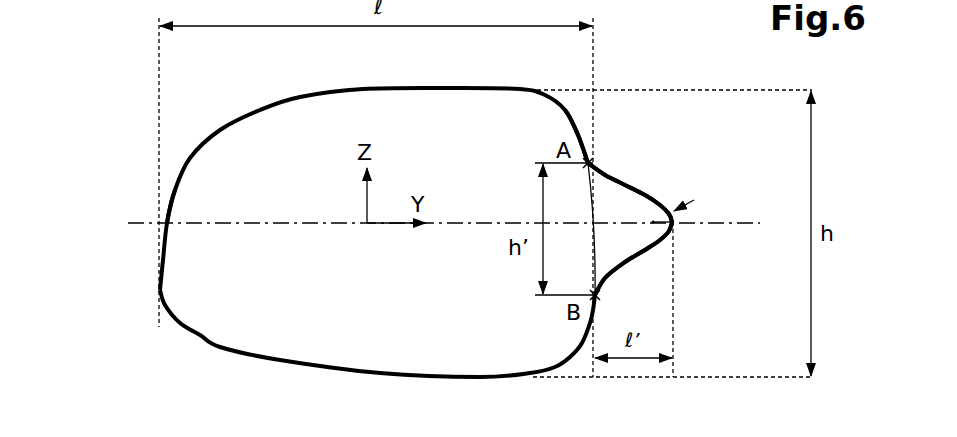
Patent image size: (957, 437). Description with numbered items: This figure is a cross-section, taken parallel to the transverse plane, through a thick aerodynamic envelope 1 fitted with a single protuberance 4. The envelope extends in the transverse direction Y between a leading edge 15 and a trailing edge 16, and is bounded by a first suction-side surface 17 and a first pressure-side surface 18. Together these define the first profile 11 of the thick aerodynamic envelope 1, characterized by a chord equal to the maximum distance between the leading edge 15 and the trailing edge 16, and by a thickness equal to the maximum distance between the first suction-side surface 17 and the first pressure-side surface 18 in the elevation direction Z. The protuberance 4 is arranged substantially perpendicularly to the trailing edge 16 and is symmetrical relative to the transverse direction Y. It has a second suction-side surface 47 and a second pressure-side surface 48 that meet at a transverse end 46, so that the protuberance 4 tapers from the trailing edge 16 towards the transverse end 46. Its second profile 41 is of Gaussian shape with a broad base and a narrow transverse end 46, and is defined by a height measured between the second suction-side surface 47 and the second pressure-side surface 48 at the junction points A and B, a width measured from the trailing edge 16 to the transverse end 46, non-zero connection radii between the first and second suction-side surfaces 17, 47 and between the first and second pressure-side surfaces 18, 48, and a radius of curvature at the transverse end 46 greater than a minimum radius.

The thick aerodynamic envelope 1 is at (140, 136).
The protuberance 4 is at (734, 173).
The first profile 11 is at (377, 246).
The leading edge 15 is at (176, 190).
The trailing edge 16 is at (583, 136).
The first suction-side surface 17 is at (304, 98).
The first pressure-side surface 18 is at (298, 366).
The second profile 41 is at (673, 181).
The transverse end 46 is at (675, 227).
The second suction-side surface 47 is at (633, 187).
The second pressure-side surface 48 is at (640, 253).